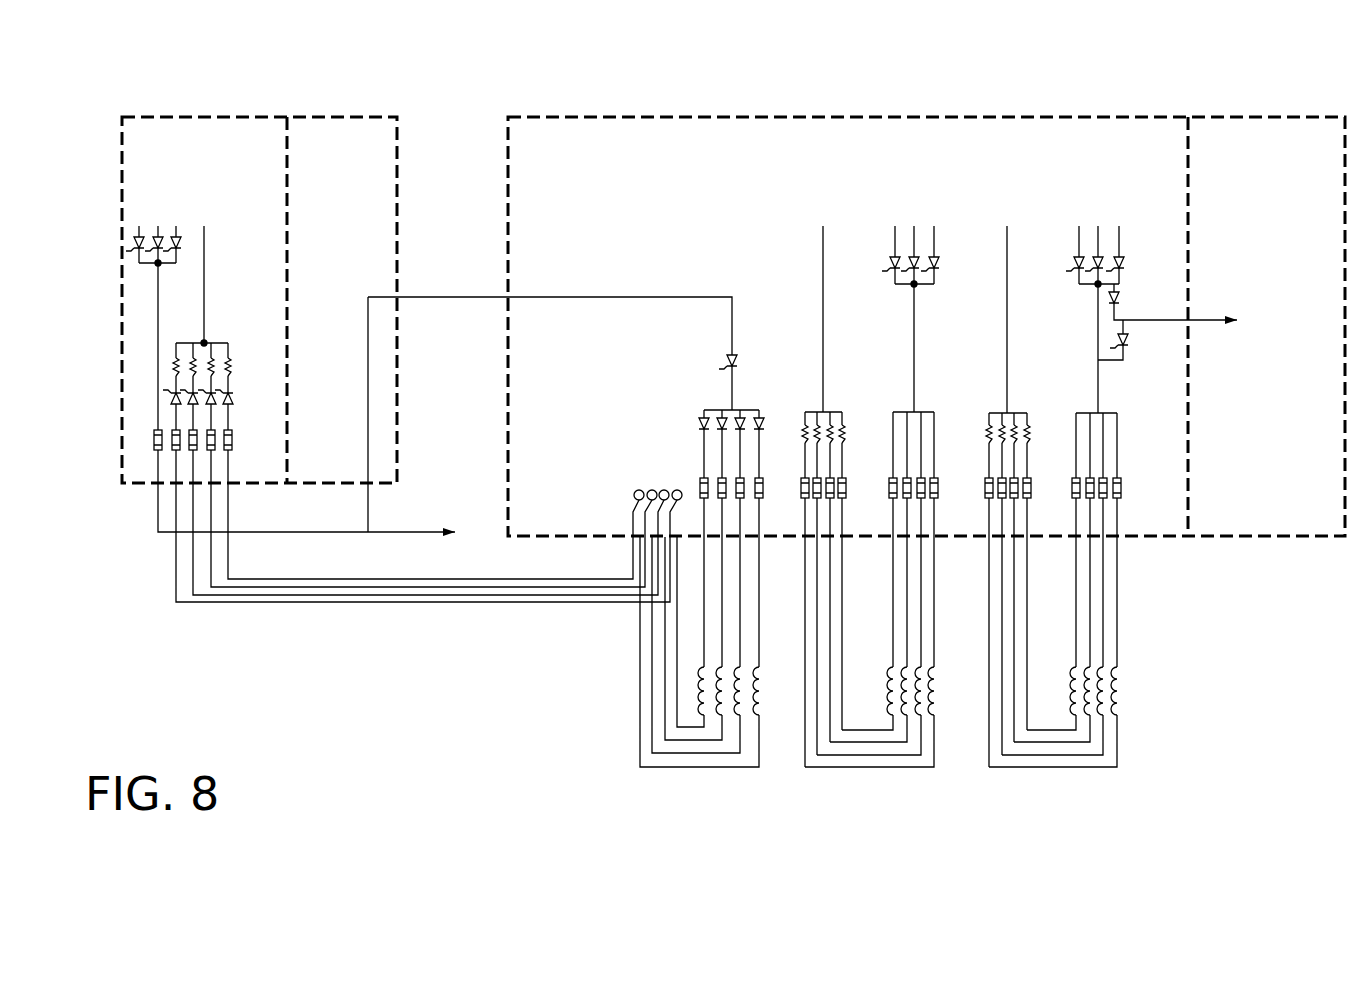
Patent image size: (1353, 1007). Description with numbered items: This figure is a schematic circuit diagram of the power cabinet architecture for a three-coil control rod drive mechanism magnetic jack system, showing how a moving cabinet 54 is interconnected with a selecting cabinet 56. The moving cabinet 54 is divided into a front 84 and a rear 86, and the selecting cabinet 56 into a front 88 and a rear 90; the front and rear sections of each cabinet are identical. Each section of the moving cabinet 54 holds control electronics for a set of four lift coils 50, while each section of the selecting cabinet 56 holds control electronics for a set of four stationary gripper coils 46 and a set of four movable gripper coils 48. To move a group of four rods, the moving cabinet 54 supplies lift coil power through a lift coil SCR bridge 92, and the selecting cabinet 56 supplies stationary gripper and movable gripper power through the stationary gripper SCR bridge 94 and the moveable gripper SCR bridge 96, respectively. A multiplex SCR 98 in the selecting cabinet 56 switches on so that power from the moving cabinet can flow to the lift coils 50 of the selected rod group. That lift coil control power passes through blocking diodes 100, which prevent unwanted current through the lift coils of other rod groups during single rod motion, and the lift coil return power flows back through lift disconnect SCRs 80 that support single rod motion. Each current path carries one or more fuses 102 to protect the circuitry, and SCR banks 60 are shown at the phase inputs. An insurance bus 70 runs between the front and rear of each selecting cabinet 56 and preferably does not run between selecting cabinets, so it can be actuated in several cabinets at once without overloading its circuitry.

The moving cabinet 54 is at (240, 117).
The selecting cabinet 56 is at (863, 117).
The front section of the moving cabinet 84 is at (156, 300).
The rear section of the moving cabinet 86 is at (326, 300).
The front section of the selecting cabinet 88 is at (565, 326).
The rear section of the selecting cabinet 90 is at (1236, 326).
The lift coil SCR bridge 92 is at (178, 200).
The stationary gripper SCR bridge 94 is at (1098, 195).
The moveable gripper SCR bridge 96 is at (916, 195).
The thyristor bank 60 is at (143, 272).
The lift disconnect SCRs 80 is at (247, 389).
The multiplex SCR 98 is at (724, 368).
The blocking diodes 100 is at (698, 428).
The fuses 102 is at (771, 477).
The insurance bus 70 is at (1150, 320).
The lift coils 50 is at (759, 667).
The movable gripper coils 48 is at (934, 670).
The stationary gripper coils 46 is at (1117, 670).